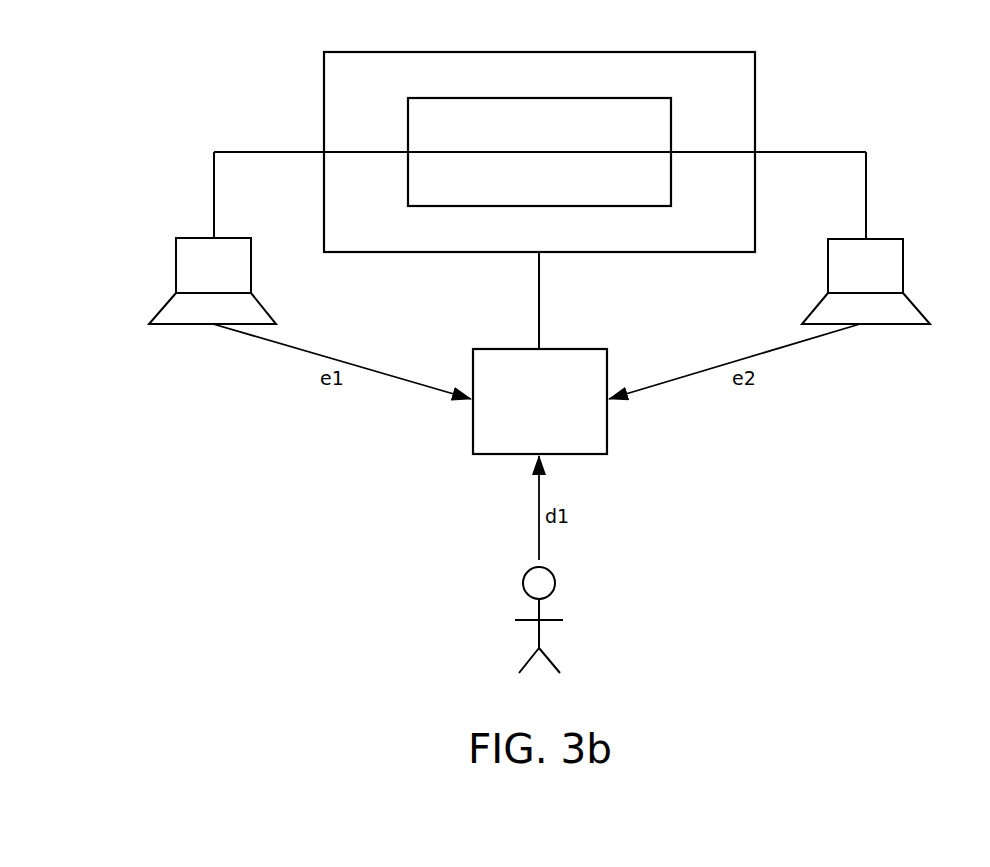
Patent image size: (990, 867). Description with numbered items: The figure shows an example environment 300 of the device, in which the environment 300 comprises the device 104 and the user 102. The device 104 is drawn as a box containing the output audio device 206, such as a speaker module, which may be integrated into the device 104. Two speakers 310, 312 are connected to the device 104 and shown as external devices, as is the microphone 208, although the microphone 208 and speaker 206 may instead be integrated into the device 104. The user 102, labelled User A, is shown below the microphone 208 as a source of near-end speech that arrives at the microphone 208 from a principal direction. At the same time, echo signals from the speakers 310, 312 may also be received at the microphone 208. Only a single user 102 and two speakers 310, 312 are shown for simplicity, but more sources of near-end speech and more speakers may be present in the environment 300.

The environment 300 is at (160, 178).
The device 104 is at (755, 97).
The output audio device 206 is at (671, 190).
The microphone 208 is at (607, 437).
The speaker 310 is at (175, 263).
The speaker 312 is at (903, 264).
The User A 102 is at (556, 582).